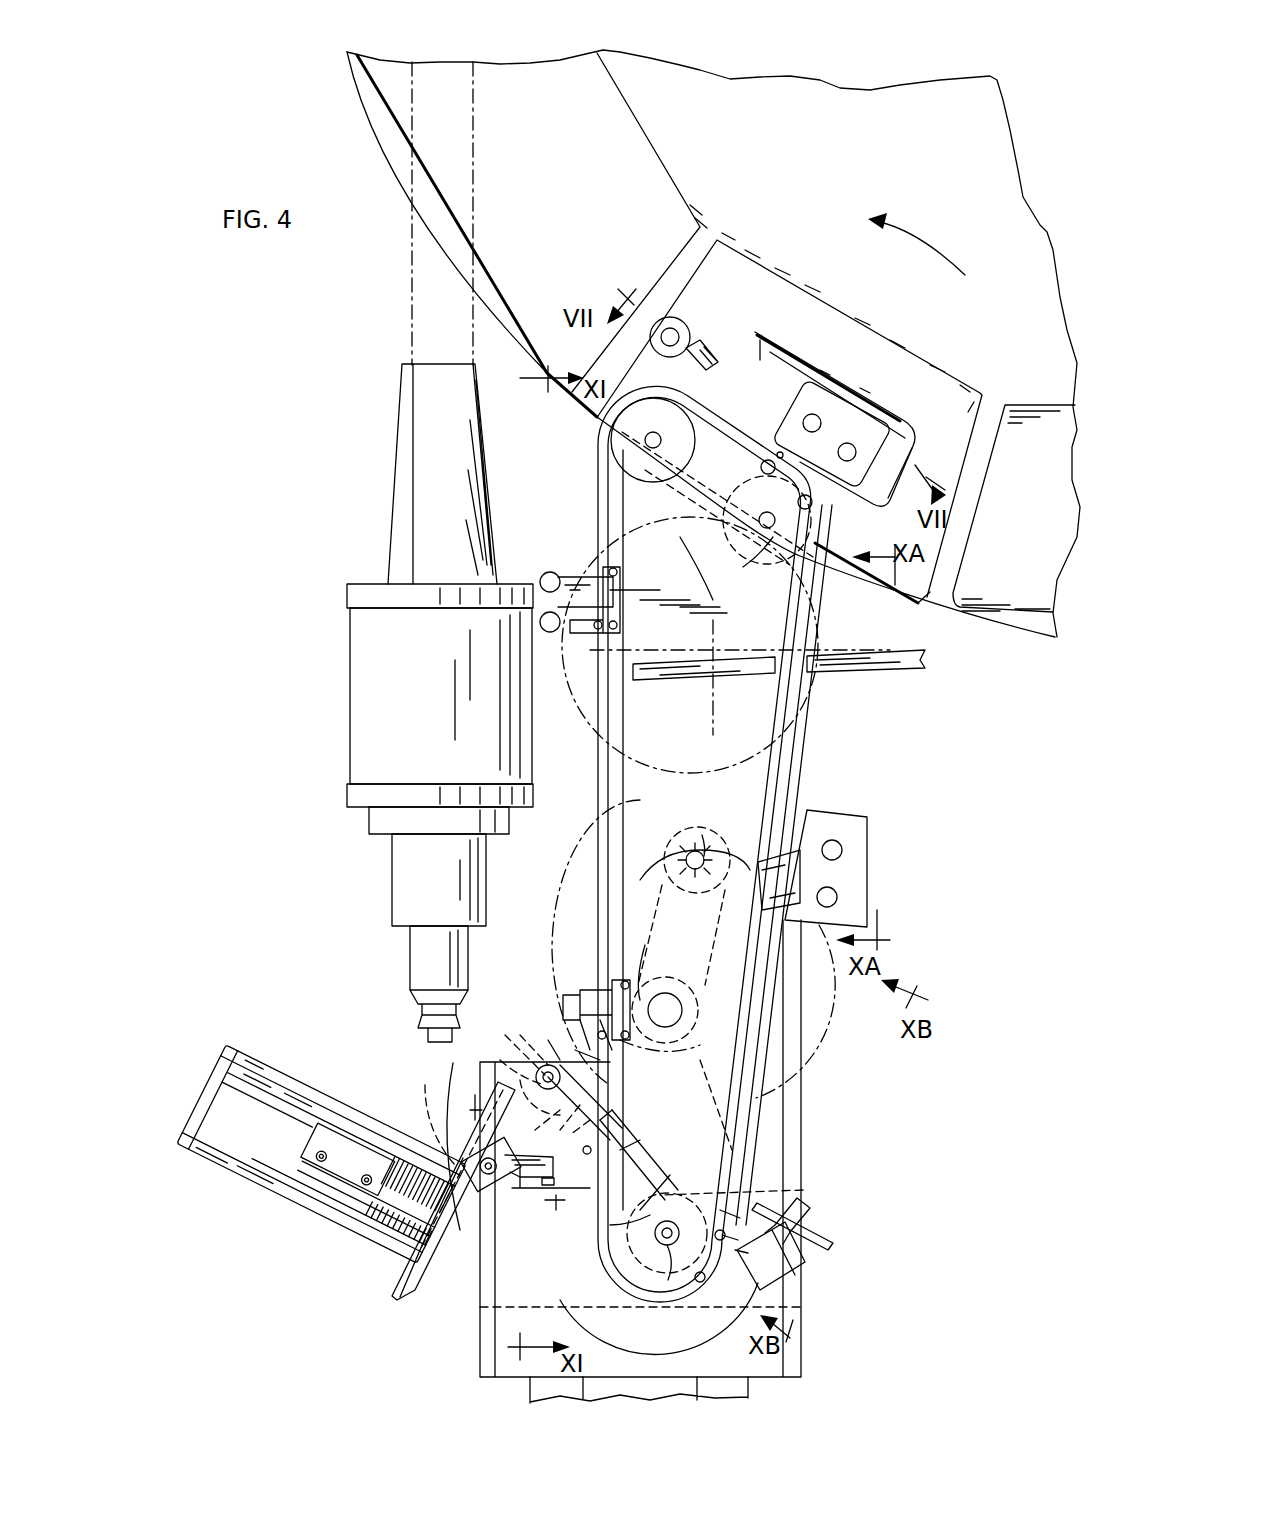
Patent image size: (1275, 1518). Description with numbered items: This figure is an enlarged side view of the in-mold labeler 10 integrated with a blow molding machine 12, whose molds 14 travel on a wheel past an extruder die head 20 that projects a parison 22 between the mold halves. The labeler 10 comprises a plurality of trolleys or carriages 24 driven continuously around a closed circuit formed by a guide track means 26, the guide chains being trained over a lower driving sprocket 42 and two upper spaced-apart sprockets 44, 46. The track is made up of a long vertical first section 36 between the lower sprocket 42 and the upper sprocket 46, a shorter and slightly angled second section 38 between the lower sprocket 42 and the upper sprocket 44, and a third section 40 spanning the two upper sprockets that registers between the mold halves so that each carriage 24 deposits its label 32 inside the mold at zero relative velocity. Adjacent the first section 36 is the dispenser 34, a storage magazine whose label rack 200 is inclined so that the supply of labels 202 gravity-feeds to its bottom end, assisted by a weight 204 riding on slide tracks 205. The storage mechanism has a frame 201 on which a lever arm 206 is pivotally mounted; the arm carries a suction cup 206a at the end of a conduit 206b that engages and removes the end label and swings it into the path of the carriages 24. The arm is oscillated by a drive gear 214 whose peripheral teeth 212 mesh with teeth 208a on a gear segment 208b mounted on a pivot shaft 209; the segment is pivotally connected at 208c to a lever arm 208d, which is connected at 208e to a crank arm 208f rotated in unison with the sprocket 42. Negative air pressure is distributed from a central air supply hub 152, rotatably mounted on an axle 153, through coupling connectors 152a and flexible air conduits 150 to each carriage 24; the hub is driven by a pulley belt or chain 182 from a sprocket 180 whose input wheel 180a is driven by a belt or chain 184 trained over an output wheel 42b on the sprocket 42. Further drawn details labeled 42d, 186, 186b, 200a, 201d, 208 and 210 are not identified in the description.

The in-mold labeler 10 is at (890, 766).
The blow molding machine 12 is at (342, 103).
The molds 14 is at (585, 190).
The die head 20 is at (445, 718).
The parison 22 is at (426, 533).
The trolleys or carriages 24 is at (553, 572).
The guide track means 26 is at (805, 718).
The label 32 is at (850, 410).
The dispenser (storage magazine) 34 is at (322, 1072).
The first section 36 is at (608, 712).
The second section 38 is at (800, 692).
The third section 40 is at (707, 403).
The lower driving sprocket 42 is at (680, 1265).
The output wheel 42b is at (650, 1225).
The lower pulley shaft 42d is at (667, 1245).
The upper sprocket 44 is at (760, 545).
The upper sprocket 46 is at (638, 428).
The flexible air conduit 150 is at (717, 637).
The central air supply hub 152 is at (692, 845).
The coupling connectors 152a is at (703, 835).
The axle 153 is at (686, 857).
The sprocket 180 is at (708, 858).
The input wheel 180a is at (668, 1048).
The pulley belt or drive chain 182 is at (706, 925).
The pulley belt or chain 184 is at (712, 1075).
The roller 186 is at (663, 995).
The roller arm 186b is at (650, 950).
The label rack 200 is at (250, 1053).
The assembly base 200a is at (403, 1270).
The frame 201 is at (393, 1297).
The support bar pivot block 201d is at (512, 1190).
The labels 202 is at (400, 1162).
The weight 204 is at (338, 1148).
The slide tracks 205 is at (250, 1142).
The lever arm 206 is at (520, 1190).
The suction cup 206a is at (558, 1205).
The conduit 206b is at (548, 1188).
The lever 208 is at (600, 1138).
The teeth 208a is at (552, 1035).
The gear segment 208b is at (548, 1040).
The pivotal connection 208c is at (540, 1060).
The lever arm 208d is at (598, 1128).
The pivotal connection 208e is at (640, 1200).
The crank arm 208f is at (760, 1189).
The pivot shaft 209 is at (564, 1090).
The guide path 210 is at (500, 1060).
The teeth 212 is at (425, 1092).
The drive gear 214 is at (477, 1146).